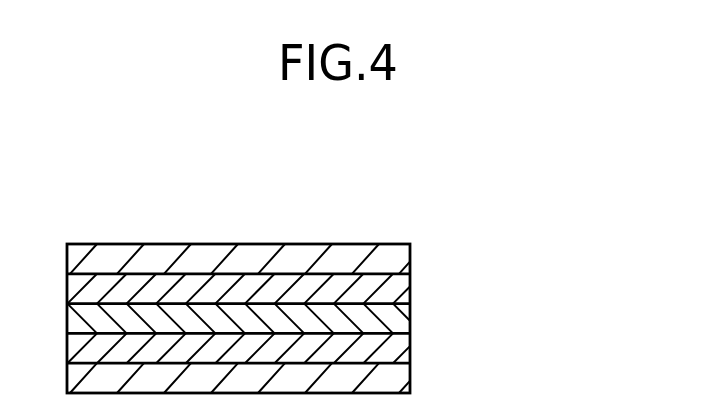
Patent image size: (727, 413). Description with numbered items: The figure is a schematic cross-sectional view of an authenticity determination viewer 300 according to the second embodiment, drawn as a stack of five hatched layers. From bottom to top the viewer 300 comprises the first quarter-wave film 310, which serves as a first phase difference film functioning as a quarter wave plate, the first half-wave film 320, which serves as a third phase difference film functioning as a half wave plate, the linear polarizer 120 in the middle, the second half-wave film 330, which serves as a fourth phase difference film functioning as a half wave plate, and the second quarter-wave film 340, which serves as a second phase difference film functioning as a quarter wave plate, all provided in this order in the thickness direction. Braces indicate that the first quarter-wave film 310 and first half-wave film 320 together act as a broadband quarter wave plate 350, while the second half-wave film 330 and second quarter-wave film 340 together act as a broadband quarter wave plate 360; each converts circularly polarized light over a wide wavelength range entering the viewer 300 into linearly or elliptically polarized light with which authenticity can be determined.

The authenticity determination viewer 300 is at (450, 170).
The second λ/4 film 340 is at (403, 263).
The second λ/2 film 330 is at (403, 295).
The broadband ¼ wave plate 360 is at (490, 242).
The linear polarizer 120 is at (403, 323).
The first λ/2 film 320 is at (403, 353).
The first λ/4 film 310 is at (403, 383).
The broadband ¼ wave plate 350 is at (490, 332).